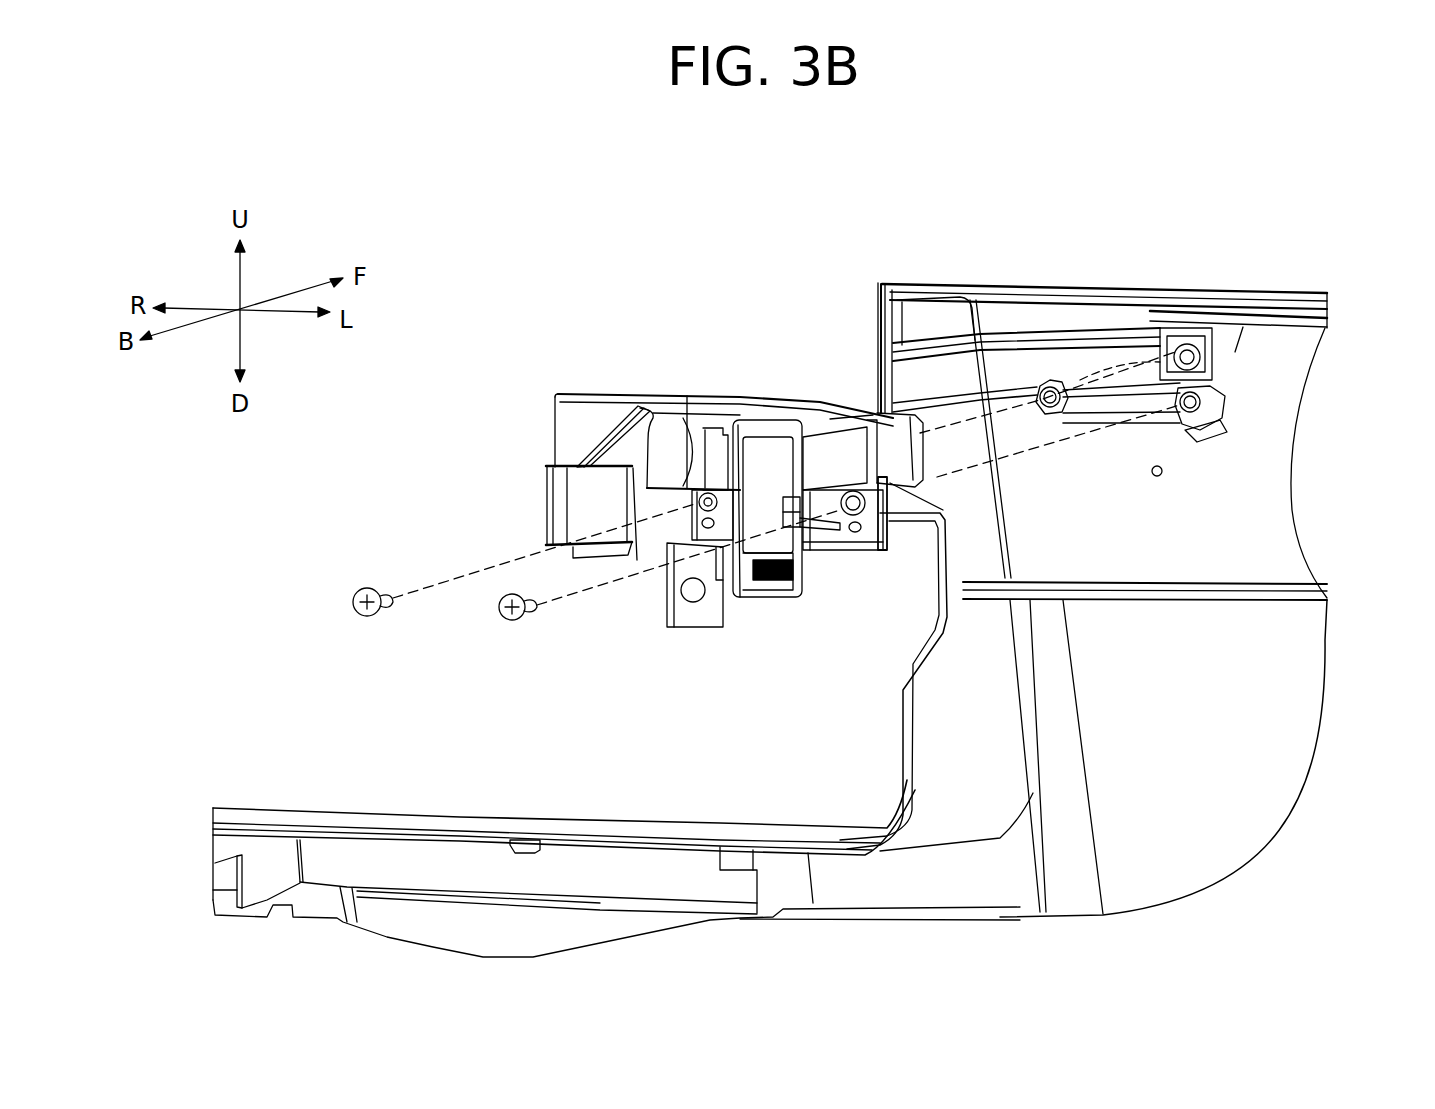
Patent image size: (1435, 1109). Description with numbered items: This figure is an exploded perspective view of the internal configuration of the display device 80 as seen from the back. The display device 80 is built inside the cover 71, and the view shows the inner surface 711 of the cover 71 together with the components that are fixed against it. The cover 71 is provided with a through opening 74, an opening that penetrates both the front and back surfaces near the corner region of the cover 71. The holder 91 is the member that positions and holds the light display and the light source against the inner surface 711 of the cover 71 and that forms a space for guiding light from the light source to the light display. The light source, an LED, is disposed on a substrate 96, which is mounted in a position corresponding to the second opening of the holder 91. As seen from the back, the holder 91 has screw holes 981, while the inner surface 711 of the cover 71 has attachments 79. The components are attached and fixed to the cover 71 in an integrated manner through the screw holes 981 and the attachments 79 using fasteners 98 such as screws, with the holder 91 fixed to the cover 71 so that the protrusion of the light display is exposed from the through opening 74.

The display device 80 is at (771, 269).
The holder 91 is at (575, 387).
The screw holes 981 is at (690, 488).
The substrate 96 is at (783, 600).
The fasteners 98 is at (357, 593).
The cover 71 is at (1070, 287).
The through opening 74 is at (950, 340).
The attachments 79 is at (1200, 395).
The inner surface 711 is at (1268, 488).